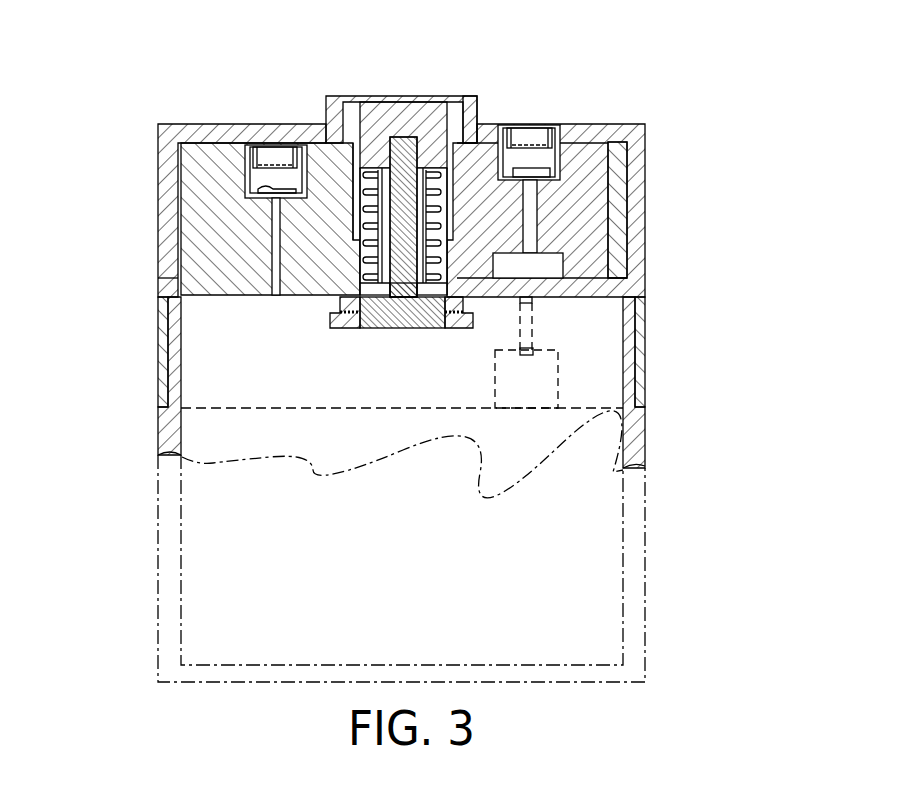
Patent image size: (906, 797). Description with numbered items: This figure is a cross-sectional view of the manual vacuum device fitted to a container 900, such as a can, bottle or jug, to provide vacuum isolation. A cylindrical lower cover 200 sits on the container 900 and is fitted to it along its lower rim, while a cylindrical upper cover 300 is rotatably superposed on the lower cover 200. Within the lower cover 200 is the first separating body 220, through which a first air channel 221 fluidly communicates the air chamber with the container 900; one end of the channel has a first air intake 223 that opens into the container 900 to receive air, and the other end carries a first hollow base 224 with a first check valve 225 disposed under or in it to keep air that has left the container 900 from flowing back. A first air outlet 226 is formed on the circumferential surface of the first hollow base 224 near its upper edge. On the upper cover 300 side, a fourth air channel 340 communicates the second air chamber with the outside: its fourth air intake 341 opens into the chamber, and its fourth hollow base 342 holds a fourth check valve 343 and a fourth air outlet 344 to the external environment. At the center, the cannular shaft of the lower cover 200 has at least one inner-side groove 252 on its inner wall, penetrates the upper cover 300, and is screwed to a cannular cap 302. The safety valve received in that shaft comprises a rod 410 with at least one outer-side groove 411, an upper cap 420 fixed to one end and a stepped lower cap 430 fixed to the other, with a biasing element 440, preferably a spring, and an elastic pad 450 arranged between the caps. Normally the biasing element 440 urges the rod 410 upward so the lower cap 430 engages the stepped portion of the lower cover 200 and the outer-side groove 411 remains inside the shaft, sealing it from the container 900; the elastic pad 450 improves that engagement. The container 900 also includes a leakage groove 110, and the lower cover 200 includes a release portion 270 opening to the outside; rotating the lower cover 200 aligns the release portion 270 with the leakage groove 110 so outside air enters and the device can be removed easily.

The upper cover 300 is at (150, 128).
The lower cover 200 is at (148, 295).
The container 900 is at (658, 433).
The first separating body 220 is at (224, 195).
The first air channel 221 is at (273, 242).
The first air intake 223 is at (275, 297).
The first hollow base 224 is at (253, 148).
The first check valve 225 is at (260, 181).
The first air outlet 226 is at (275, 127).
The inner-side groove 252 is at (357, 96).
The cannular cap 302 is at (468, 96).
The upper cap 420 is at (392, 107).
The biasing element 440 is at (356, 178).
The rod 410 is at (435, 220).
The outer-side groove 411 is at (420, 275).
The lower cap 430 is at (359, 330).
The elastic pad 450 is at (332, 313).
The fourth air outlet 344 is at (530, 127).
The fourth hollow base 342 is at (558, 130).
The fourth check valve 343 is at (551, 172).
The fourth air channel 340 is at (532, 225).
The fourth air intake 341 is at (542, 265).
The leakage groove 110 is at (533, 323).
The release portion 270 is at (547, 375).